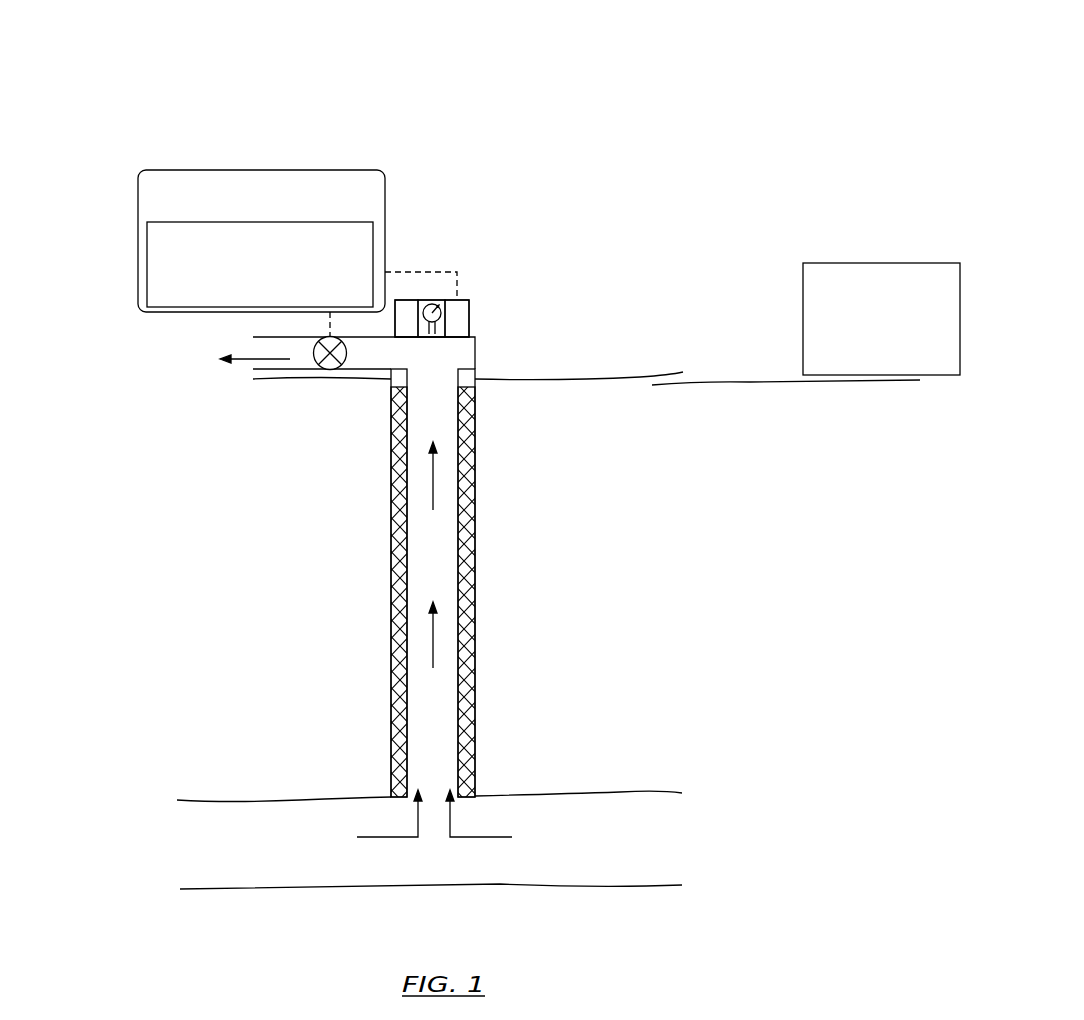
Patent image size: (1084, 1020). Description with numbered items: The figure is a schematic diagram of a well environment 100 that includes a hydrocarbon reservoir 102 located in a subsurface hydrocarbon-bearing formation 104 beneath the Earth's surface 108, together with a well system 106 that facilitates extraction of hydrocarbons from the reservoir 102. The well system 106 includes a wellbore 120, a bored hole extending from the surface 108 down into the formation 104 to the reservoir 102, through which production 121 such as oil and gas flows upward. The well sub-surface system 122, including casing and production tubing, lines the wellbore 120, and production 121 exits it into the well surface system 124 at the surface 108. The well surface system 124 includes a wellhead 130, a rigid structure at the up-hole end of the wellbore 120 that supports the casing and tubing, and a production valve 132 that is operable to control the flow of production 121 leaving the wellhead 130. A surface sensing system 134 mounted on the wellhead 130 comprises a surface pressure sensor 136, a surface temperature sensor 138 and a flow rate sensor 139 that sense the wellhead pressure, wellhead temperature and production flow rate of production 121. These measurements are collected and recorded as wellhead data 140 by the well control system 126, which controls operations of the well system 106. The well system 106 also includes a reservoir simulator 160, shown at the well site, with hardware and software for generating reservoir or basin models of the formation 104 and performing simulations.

The well environment 100 is at (560, 54).
The hydrocarbon reservoir 102 is at (593, 861).
The hydrocarbon-bearing formation 104 is at (612, 671).
The well system 106 is at (232, 140).
The surface 108 is at (564, 386).
The wellbore 120 is at (481, 523).
The production 121 is at (189, 346).
The well sub-surface system 122 is at (382, 614).
The well surface system 124 is at (652, 220).
The well control system 126 is at (178, 218).
The wellhead 130 is at (481, 364).
The production valve 132 is at (329, 371).
The surface sensing system 134 is at (476, 312).
The surface pressure sensor 136 is at (433, 300).
The surface temperature sensor 138 is at (462, 295).
The flow rate sensor 139 is at (403, 300).
The wellhead data 140 is at (275, 287).
The simulator 160 is at (897, 357).